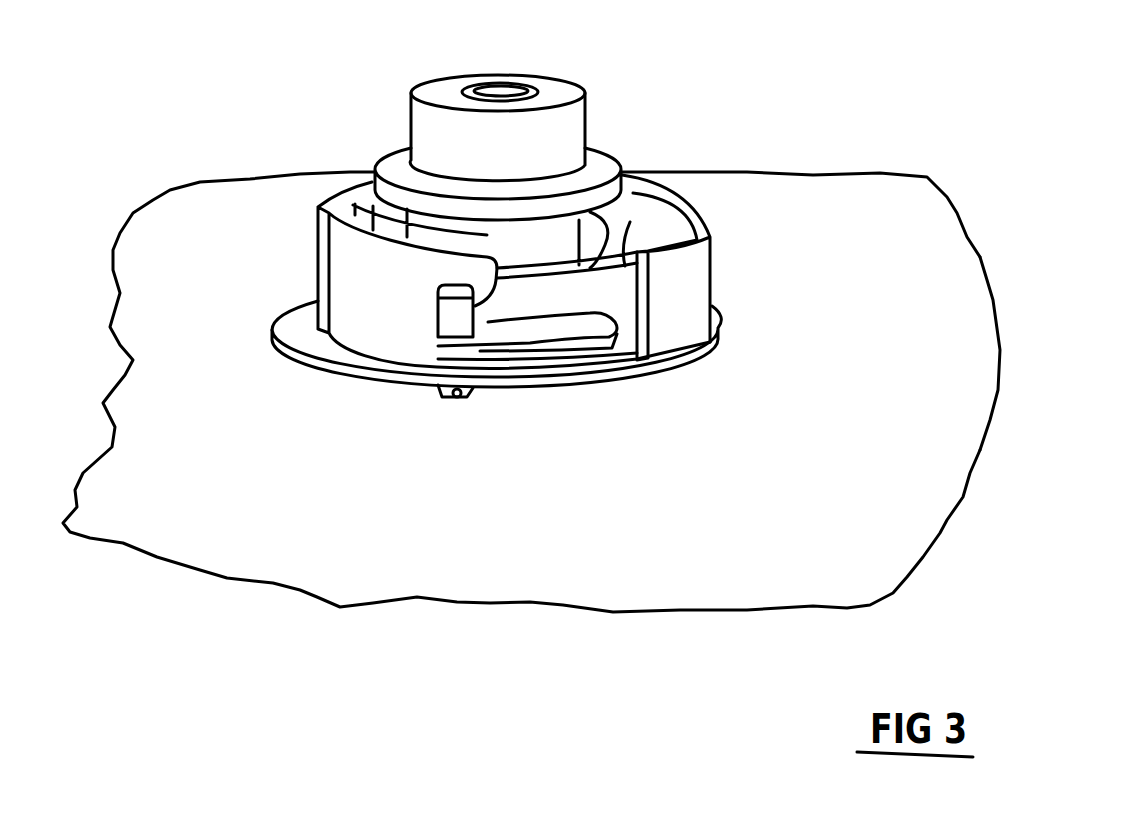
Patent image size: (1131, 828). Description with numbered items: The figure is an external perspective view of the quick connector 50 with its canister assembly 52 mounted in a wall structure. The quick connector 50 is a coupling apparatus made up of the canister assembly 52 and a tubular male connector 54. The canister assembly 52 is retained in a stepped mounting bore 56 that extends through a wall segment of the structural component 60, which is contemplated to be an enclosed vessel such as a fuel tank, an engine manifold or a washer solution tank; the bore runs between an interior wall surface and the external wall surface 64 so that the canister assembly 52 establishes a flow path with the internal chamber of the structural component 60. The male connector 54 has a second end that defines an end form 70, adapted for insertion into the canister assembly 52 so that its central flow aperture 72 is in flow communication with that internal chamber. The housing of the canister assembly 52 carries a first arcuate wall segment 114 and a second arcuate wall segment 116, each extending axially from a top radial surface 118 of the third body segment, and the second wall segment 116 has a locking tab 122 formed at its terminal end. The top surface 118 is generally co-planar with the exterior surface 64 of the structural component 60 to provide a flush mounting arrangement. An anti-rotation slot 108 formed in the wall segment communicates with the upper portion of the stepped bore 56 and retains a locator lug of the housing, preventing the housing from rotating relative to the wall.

The quick connector 50 is at (705, 128).
The canister assembly 52 is at (622, 356).
The tubular male connector 54 is at (590, 116).
The stepped mounting bore 56 is at (326, 357).
The structural component 60 is at (950, 258).
The external wall surface 64 is at (957, 400).
The end form 70 is at (427, 132).
The central flow aperture 72 is at (512, 93).
The anti-rotation slot 108 is at (458, 398).
The first arcuate wall segment 114 is at (697, 262).
The second arcuate wall segment 116 is at (355, 262).
The top radial surface 118 is at (290, 333).
The locking tab 122 is at (486, 288).